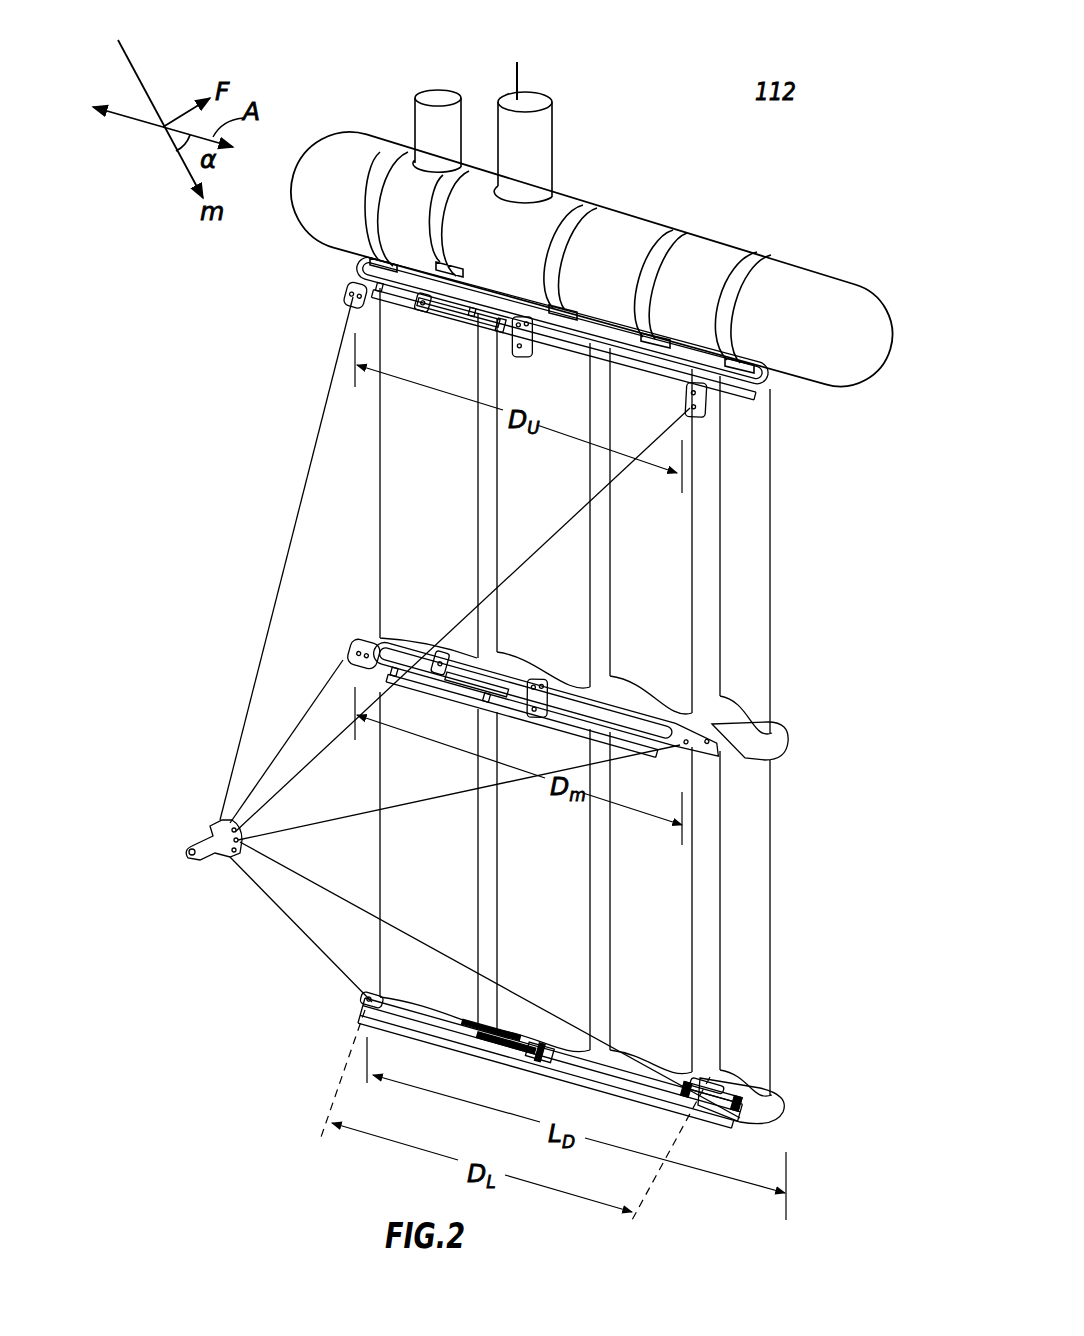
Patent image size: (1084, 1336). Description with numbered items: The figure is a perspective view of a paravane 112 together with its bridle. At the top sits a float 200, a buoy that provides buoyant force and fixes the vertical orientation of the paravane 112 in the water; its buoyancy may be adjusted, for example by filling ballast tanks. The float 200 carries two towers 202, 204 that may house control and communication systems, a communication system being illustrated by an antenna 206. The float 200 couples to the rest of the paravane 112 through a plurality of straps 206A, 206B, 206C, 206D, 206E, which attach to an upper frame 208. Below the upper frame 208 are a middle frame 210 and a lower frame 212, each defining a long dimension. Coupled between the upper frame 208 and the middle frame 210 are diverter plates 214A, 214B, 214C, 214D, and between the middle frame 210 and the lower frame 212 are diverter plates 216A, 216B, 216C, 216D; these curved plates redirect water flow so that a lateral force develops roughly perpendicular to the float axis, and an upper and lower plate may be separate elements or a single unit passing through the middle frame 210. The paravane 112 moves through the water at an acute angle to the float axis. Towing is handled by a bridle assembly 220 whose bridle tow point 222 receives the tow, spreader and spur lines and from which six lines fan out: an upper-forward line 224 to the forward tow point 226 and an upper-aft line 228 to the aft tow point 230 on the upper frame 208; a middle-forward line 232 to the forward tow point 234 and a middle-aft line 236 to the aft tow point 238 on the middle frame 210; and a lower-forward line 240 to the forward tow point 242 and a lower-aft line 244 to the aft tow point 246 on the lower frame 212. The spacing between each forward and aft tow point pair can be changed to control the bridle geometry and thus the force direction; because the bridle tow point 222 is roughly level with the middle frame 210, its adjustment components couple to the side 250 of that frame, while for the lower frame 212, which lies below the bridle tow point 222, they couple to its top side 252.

The paravane 112 is at (690, 128).
The float 200 is at (637, 230).
The tower 202 is at (432, 92).
The tower 204 is at (550, 98).
The antenna 206 is at (518, 75).
The strap 206A is at (376, 185).
The strap 206B is at (445, 212).
The strap 206C is at (582, 207).
The strap 206D is at (665, 247).
The strap 206E is at (762, 258).
The upper frame 208 is at (773, 380).
The middle frame 210 is at (780, 731).
The lower frame 212 is at (787, 1100).
The diverter plate 214A is at (753, 492).
The diverter plate 214B is at (651, 531).
The diverter plate 214C is at (543, 503).
The diverter plate 214D is at (429, 473).
The diverter plate 216A is at (753, 843).
The diverter plate 216B is at (651, 903).
The diverter plate 216C is at (543, 882).
The diverter plate 216D is at (429, 858).
The bridle assembly 220 is at (228, 622).
The bridle tow point 222 is at (205, 830).
The upper-forward line 224 is at (276, 797).
The forward tow point 226 is at (692, 410).
The upper-aft line 228 is at (297, 517).
The aft tow point 230 is at (350, 292).
The middle-forward line 232 is at (283, 835).
The forward tow point 234 is at (678, 752).
The middle-aft line 236 is at (340, 680).
The aft tow point 238 is at (360, 640).
The lower-forward line 240 is at (272, 872).
The forward tow point 242 is at (723, 1070).
The lower-aft line 244 is at (280, 905).
The aft tow point 246 is at (370, 1005).
The side of the middle frame 250 is at (768, 763).
The top side of the lower frame 252 is at (763, 1110).